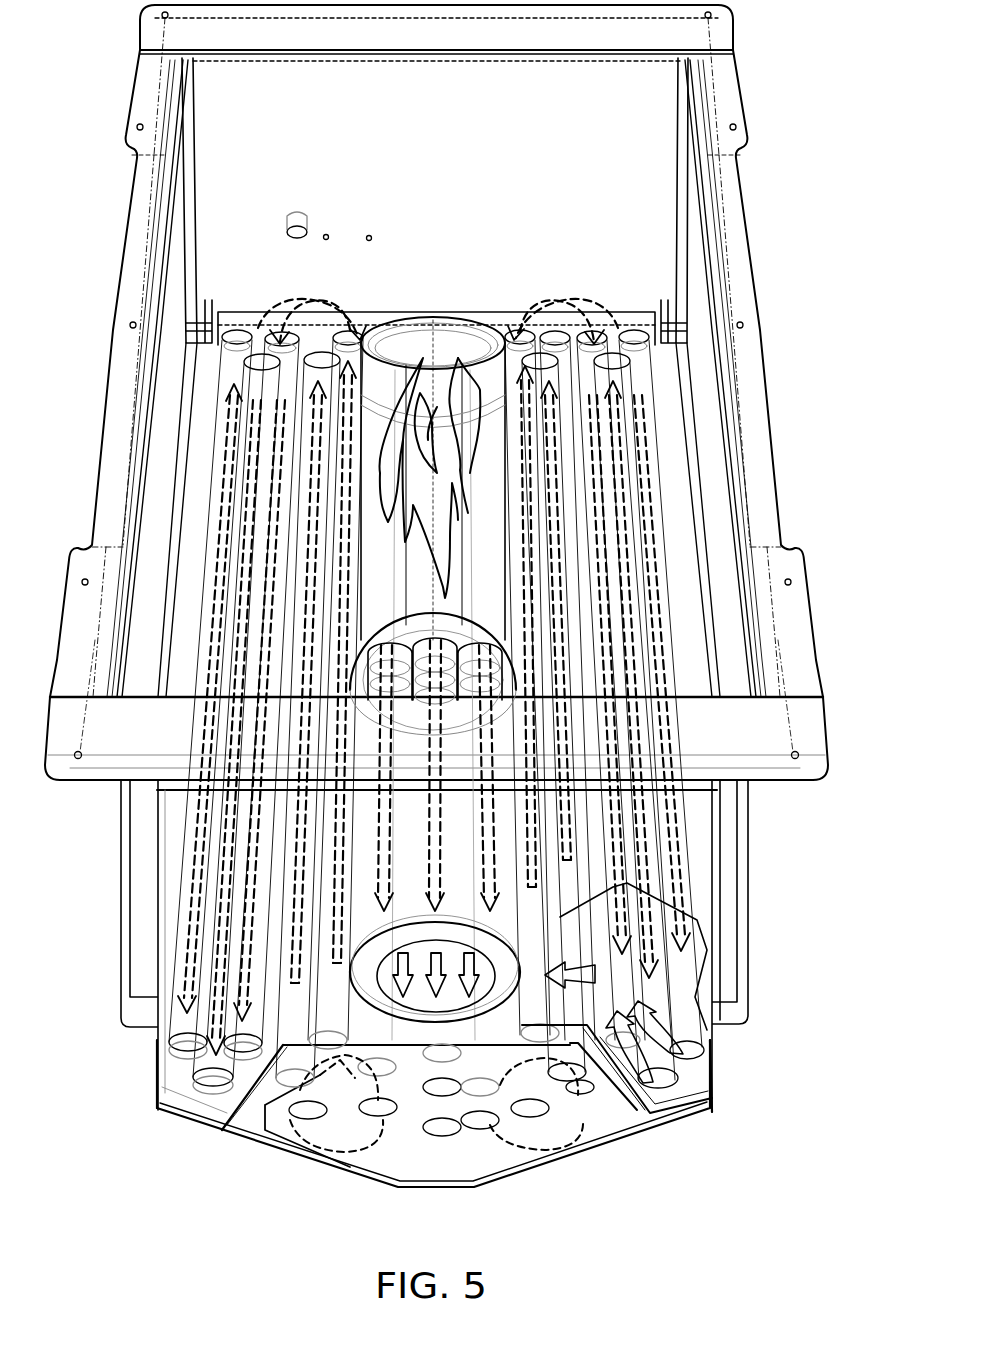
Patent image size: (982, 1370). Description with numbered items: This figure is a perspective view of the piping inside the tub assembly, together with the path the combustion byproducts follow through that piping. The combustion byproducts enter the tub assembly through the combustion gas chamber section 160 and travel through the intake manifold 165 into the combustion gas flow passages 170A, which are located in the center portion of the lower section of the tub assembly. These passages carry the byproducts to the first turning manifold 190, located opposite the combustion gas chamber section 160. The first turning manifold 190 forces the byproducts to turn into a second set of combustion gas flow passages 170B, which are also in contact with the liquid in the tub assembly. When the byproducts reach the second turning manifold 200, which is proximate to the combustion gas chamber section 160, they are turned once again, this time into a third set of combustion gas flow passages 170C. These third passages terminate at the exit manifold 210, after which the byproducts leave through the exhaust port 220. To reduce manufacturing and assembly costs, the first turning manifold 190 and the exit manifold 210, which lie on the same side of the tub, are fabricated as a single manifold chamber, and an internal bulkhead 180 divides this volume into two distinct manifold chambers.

The combustion gas chamber section 160 is at (453, 437).
The intake manifold 165 is at (474, 620).
The combustion gas flow passages 170A is at (396, 636).
The second set of combustion gas flow passages 170B is at (560, 642).
The third set of combustion gas flow passages 170C is at (250, 585).
The internal bulkhead 180 is at (637, 1100).
The first turning manifold 190 is at (407, 1130).
The second turning manifold 200 is at (585, 300).
The exit manifold 210 is at (687, 1073).
The exhaust port 220 is at (393, 983).